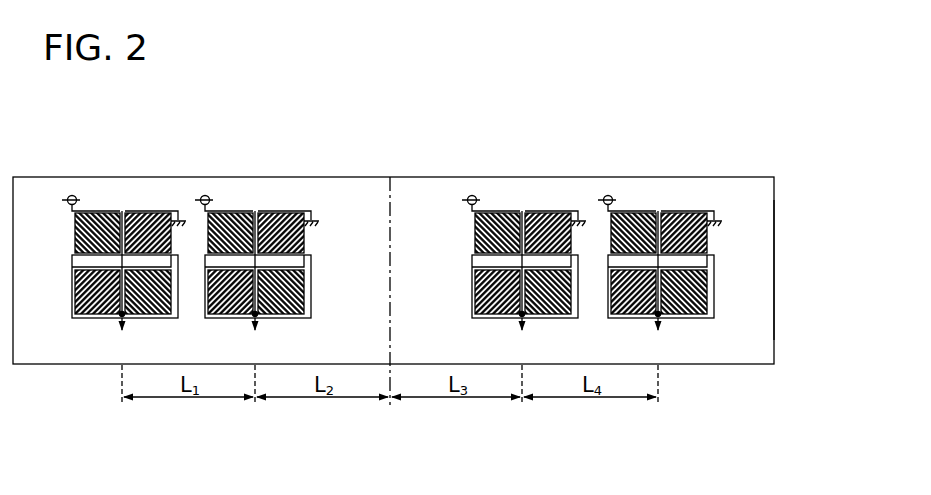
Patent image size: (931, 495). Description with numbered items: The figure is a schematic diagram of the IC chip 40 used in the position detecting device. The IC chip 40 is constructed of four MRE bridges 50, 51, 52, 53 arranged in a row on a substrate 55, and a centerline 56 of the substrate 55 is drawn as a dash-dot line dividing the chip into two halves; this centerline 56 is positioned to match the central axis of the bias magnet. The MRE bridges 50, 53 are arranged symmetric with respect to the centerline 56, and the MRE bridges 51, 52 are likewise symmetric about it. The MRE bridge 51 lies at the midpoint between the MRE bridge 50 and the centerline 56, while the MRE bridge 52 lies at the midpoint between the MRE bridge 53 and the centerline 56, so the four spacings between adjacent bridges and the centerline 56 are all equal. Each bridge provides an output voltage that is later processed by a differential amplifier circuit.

The IC chip 40 is at (703, 170).
The MRE bridge 50 is at (123, 205).
The MRE bridge 51 is at (258, 205).
The MRE bridge 52 is at (525, 205).
The MRE bridge 53 is at (660, 205).
The substrate 55 is at (740, 287).
The centerline 56 is at (379, 190).